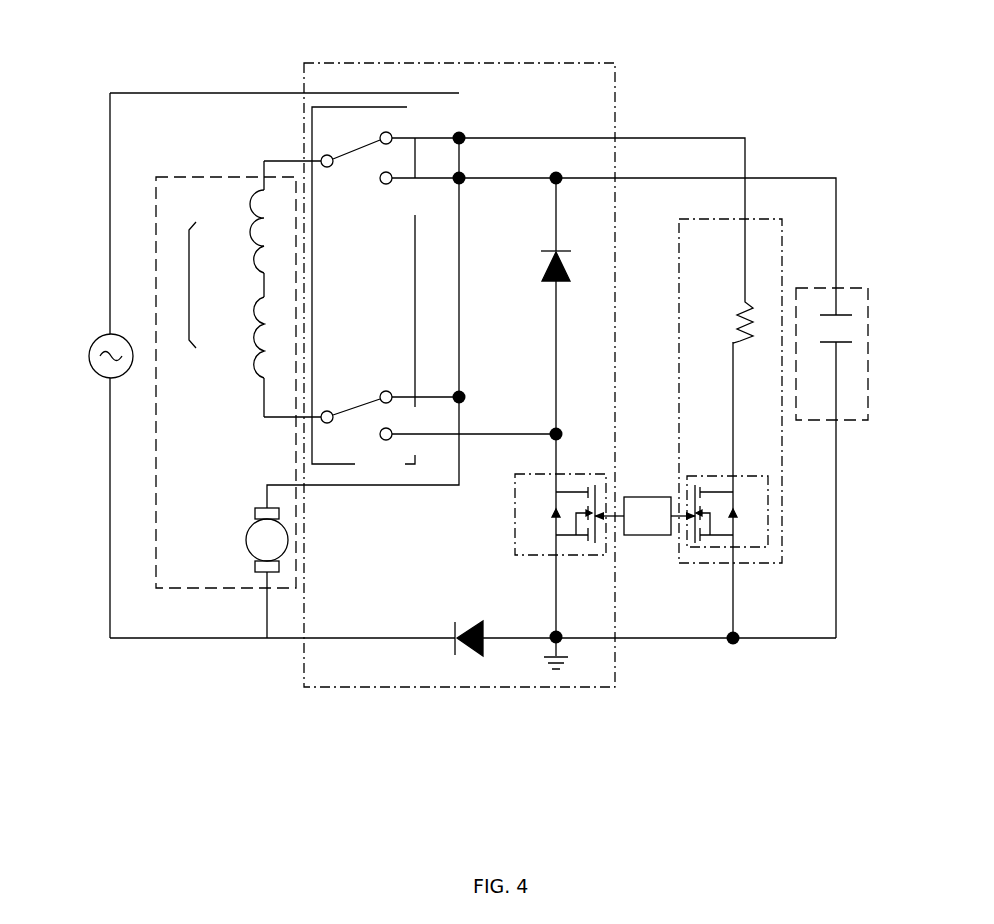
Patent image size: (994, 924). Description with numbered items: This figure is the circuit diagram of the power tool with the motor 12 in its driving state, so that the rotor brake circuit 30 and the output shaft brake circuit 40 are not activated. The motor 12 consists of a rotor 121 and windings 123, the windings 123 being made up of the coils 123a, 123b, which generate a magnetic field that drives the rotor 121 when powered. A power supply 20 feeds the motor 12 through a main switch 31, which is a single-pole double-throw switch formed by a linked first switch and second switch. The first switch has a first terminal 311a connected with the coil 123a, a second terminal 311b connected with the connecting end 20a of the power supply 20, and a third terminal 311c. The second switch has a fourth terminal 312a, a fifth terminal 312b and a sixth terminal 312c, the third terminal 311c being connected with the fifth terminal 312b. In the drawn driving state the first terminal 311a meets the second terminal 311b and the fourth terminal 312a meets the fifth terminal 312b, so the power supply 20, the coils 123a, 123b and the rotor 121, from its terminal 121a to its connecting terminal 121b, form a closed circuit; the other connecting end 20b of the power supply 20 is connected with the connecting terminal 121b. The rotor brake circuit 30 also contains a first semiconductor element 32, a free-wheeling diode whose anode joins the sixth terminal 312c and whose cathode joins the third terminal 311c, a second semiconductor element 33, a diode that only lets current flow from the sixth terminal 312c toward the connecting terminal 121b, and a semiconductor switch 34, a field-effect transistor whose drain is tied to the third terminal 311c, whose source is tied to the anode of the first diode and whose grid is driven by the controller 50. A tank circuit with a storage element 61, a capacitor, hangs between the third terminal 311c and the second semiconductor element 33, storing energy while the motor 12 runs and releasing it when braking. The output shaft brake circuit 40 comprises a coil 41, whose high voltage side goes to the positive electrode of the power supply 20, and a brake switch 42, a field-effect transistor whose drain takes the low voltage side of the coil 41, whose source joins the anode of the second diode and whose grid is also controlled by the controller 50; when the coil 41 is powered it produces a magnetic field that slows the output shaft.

The power supply 20 is at (93, 348).
The connecting end 20a is at (267, 94).
The connecting end 20b is at (456, 639).
The motor 12 is at (218, 188).
The rotor 121 is at (244, 538).
The motor first terminal 121a is at (254, 498).
The connecting terminal 121b is at (254, 578).
The windings 123 is at (212, 289).
The coil 123a is at (250, 232).
The coil 123b is at (250, 358).
The rotor brake circuit 30 is at (556, 85).
The main switch 31 is at (365, 106).
The first terminal 311a is at (338, 149).
The second terminal 311b is at (392, 129).
The third terminal 311c is at (391, 191).
The fourth terminal 312a is at (338, 405).
The fifth terminal 312b is at (390, 385).
The sixth terminal 312c is at (389, 447).
The first semiconductor element 32 is at (541, 270).
The second semiconductor element 33 is at (470, 632).
The semiconductor switch 34 is at (513, 537).
The output shaft brake circuit 40 is at (700, 350).
The coil 41 is at (743, 302).
The brake switch 42 is at (725, 475).
The controller 50 is at (645, 516).
The storage element 61 is at (822, 343).